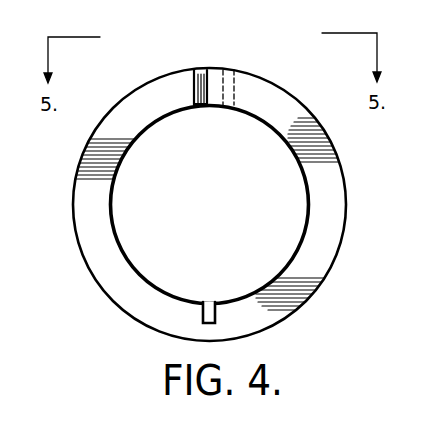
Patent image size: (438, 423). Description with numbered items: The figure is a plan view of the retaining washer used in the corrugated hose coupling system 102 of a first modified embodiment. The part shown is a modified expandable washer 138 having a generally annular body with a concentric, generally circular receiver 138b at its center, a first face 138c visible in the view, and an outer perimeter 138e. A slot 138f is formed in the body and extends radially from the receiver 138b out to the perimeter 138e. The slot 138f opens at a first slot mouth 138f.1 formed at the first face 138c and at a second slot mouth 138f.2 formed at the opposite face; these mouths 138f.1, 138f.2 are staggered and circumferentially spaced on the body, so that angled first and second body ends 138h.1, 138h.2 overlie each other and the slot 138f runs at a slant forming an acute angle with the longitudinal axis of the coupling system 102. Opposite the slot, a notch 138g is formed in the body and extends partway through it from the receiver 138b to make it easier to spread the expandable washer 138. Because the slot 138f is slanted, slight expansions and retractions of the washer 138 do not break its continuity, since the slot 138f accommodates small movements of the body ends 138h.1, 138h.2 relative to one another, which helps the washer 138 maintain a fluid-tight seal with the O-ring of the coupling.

The corrugated hose coupling system 102 is at (90, 297).
The expandable washer 138 is at (327, 138).
The receiver 138b is at (112, 198).
The first face 138c is at (105, 262).
The perimeter 138e is at (338, 257).
The slot 138f is at (195, 88).
The first slot mouth 138f.1 is at (195, 71).
The second slot mouth 138f.2 is at (252, 93).
The notch 138g is at (210, 318).
The first body end 138h.1 is at (195, 100).
The second body end 138h.2 is at (234, 84).